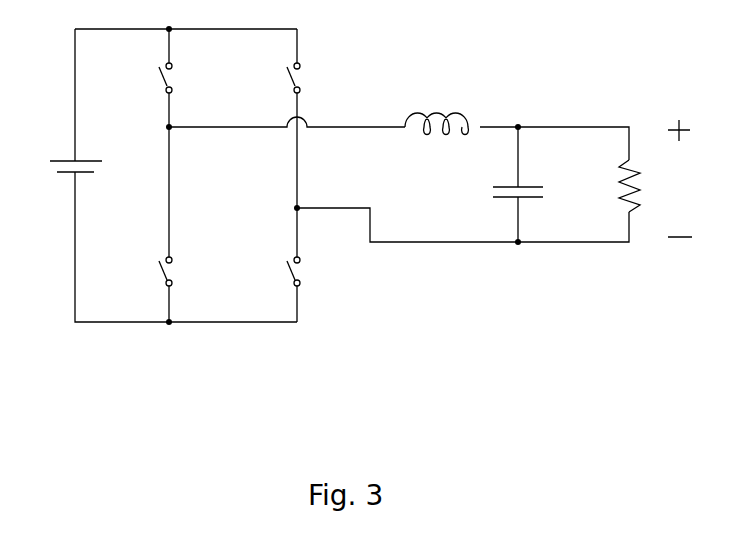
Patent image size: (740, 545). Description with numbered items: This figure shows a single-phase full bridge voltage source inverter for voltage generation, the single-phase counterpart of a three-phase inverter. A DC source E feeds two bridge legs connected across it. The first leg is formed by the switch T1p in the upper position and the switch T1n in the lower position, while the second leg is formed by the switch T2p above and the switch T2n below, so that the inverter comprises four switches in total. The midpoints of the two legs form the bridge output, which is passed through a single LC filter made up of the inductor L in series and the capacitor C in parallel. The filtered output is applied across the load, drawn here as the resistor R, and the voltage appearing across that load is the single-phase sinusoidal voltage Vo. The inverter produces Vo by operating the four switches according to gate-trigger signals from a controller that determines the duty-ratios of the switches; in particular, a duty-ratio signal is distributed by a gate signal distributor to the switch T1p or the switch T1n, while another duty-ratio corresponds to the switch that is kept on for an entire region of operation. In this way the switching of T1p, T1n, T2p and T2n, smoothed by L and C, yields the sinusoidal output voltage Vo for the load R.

The DC voltage source E is at (63, 165).
The switch T1p is at (186, 77).
The switch T2p is at (314, 77).
The switch T1n is at (186, 276).
The switch T2n is at (314, 276).
The filter inductor L is at (436, 107).
The filter capacitor C is at (500, 191).
The load resistor R is at (610, 186).
The single-phase sinusoidal voltage Vo is at (686, 178).